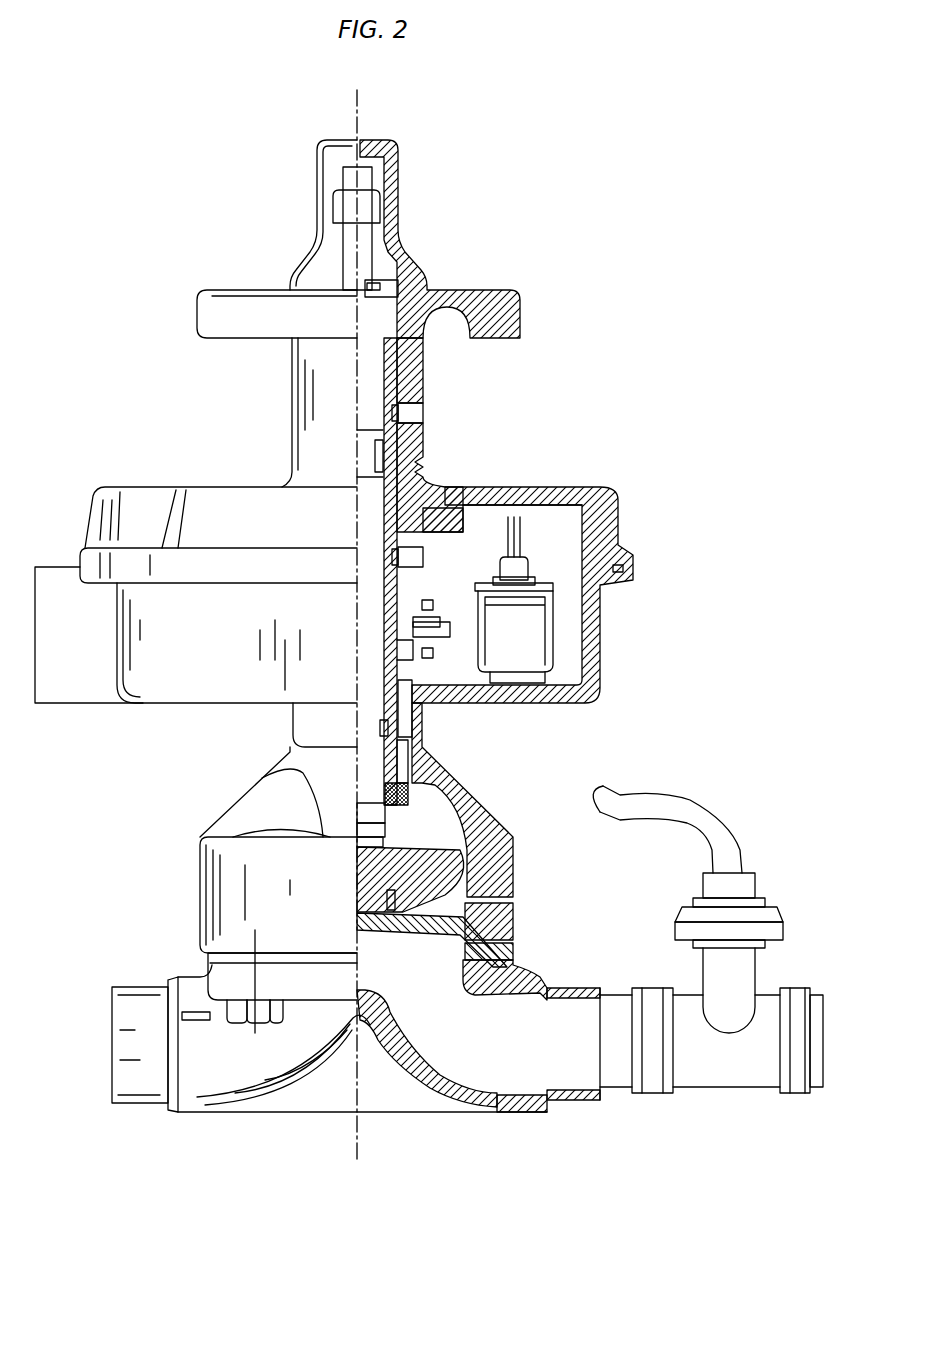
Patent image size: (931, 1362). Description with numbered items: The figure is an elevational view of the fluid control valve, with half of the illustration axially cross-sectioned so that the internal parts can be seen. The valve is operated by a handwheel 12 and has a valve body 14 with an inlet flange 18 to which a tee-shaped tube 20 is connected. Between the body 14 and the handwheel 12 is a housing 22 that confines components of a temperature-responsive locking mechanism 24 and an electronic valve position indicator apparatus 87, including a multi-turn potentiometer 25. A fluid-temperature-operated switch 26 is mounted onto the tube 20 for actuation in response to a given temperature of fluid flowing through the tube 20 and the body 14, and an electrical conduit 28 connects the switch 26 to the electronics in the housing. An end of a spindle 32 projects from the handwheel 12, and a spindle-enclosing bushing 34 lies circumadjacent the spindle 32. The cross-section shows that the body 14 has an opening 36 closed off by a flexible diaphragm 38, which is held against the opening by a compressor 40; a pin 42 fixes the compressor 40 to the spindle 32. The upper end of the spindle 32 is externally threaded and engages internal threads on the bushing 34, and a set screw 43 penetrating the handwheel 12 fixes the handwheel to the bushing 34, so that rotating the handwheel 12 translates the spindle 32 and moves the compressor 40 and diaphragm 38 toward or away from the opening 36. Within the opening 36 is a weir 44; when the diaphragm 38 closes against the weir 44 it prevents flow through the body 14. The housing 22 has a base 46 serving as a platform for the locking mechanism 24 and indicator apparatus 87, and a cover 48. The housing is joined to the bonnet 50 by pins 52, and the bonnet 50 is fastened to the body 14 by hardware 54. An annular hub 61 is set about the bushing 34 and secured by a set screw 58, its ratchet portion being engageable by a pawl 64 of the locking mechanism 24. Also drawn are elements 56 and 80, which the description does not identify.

The handwheel 12 is at (513, 295).
The valve body 14 is at (200, 1097).
The inlet flange 18 is at (643, 1080).
The tee-shaped tube 20 is at (717, 1087).
The housing 22 is at (580, 690).
The temperature-responsive locking mechanism 24 is at (530, 567).
The multi-turn potentiometer 25 is at (553, 620).
The fluid-temperature-operated switch 26 is at (717, 887).
The electrical conduit 28 is at (703, 815).
The spindle 32 is at (363, 364).
The spindle-enclosing bushing 34 is at (400, 368).
The opening 36 is at (457, 978).
The flexible diaphragm 38 is at (503, 960).
The compressor 40 is at (373, 883).
The pin 42 is at (357, 867).
The set screw 43 is at (392, 418).
The weir 44 is at (367, 1022).
The base 46 is at (117, 622).
The cover 48 is at (90, 535).
The bonnet 50 is at (185, 892).
The pins 52 is at (412, 712).
The hardware 54 is at (252, 1018).
The lever plate 56 is at (397, 577).
The set screw 58 is at (393, 553).
The annular hub 61 is at (453, 517).
The pawl 64 is at (397, 607).
The tee branch 80 is at (717, 972).
The electronic valve position indicator apparatus 87 is at (487, 530).